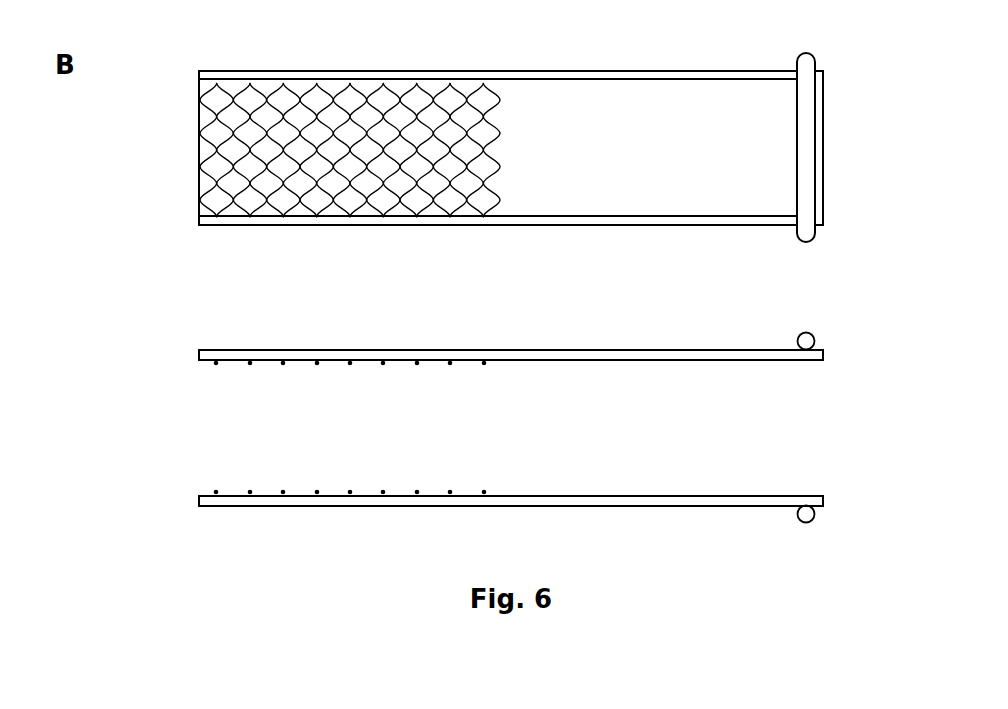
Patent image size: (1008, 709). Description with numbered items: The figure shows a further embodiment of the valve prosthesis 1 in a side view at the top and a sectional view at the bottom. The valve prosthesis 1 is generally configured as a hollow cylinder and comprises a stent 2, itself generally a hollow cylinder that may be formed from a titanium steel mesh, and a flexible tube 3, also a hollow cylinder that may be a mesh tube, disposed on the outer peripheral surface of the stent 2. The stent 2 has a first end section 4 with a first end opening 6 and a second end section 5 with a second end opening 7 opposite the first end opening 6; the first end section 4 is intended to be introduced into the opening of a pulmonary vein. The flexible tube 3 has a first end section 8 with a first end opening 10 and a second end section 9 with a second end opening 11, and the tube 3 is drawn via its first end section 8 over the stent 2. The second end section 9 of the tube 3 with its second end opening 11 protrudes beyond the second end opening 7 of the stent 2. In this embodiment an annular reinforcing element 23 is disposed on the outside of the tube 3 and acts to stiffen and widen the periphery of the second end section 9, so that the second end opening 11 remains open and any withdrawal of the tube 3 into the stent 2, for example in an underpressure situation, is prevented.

The valve prosthesis 1 is at (180, 273).
The stent 2 is at (317, 197).
The flexible tube 3 is at (502, 350).
The first end section 4 is at (257, 195).
The second end section 5 is at (448, 163).
The first end opening 6 is at (185, 120).
The second end opening 7 is at (485, 158).
The first end section 8 is at (248, 73).
The second end section 9 is at (752, 220).
The first end opening 10 is at (185, 168).
The second end opening 11 is at (807, 135).
The annular reinforcing element 23 is at (790, 82).